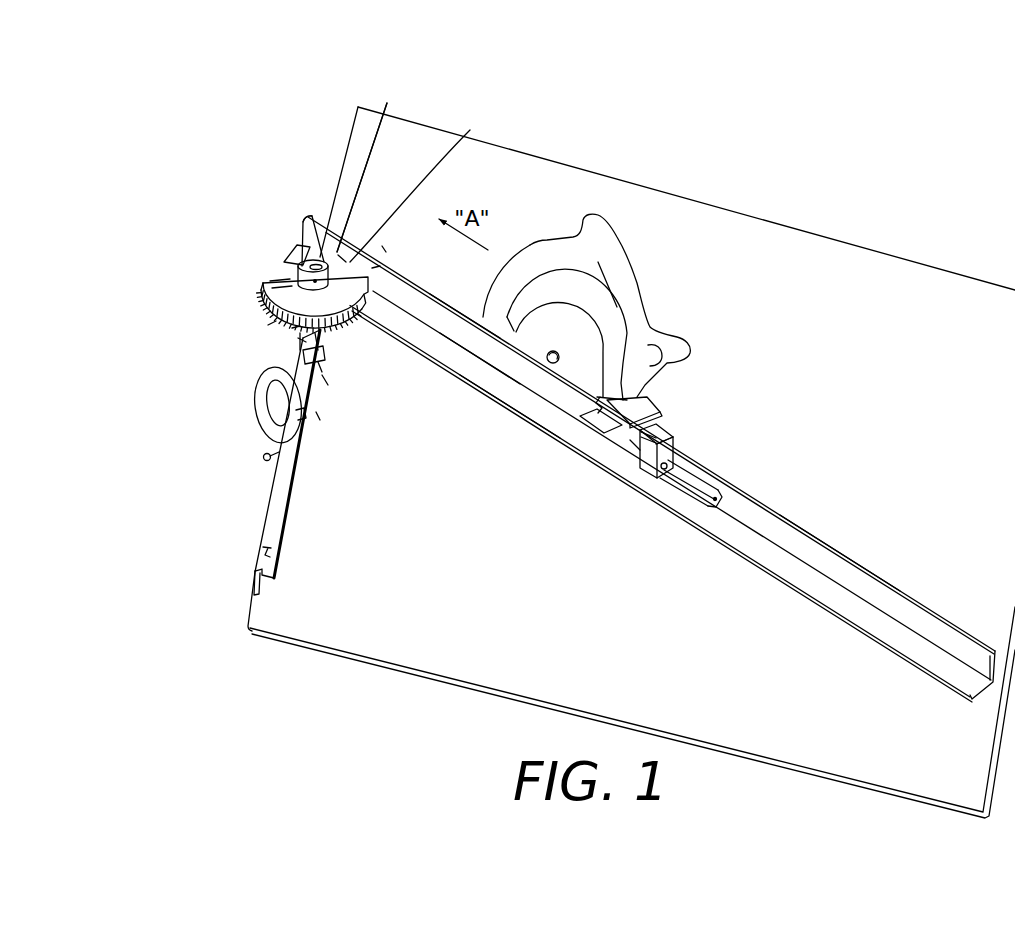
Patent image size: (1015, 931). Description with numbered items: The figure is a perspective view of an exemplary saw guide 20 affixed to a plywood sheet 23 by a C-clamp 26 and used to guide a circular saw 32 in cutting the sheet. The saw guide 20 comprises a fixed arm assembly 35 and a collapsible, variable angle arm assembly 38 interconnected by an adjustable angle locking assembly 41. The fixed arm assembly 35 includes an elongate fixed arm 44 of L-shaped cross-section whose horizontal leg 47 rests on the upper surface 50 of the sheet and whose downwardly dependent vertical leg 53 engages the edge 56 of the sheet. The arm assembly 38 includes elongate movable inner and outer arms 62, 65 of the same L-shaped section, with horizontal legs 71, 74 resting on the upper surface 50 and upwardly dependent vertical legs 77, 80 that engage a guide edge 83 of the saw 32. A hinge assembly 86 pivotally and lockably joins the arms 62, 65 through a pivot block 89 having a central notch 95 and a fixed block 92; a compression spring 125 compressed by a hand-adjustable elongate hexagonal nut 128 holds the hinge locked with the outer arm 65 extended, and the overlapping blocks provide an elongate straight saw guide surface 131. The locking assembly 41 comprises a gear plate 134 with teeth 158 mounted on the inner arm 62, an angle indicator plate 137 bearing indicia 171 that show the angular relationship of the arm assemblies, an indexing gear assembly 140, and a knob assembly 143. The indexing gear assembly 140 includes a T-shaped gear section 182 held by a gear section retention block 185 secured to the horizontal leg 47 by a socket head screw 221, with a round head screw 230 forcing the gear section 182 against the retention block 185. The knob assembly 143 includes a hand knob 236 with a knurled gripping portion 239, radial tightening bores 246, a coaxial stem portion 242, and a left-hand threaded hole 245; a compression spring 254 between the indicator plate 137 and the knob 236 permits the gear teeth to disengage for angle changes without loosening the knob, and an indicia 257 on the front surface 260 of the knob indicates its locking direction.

The saw guide 20 is at (258, 168).
The plywood sheet 23 is at (411, 677).
The C-clamp 26 is at (256, 449).
The circular saw 32 is at (651, 283).
The fixed arm assembly 35 is at (319, 417).
The variable angle arm assembly 38 is at (617, 513).
The adjustable angle locking assembly 41 is at (280, 259).
The fixed arm 44 is at (299, 505).
The horizontal leg 47 is at (270, 550).
The upper surface 50 is at (890, 346).
The vertical leg 53 is at (255, 582).
The edge 56 is at (352, 146).
The inner arm 62 is at (465, 308).
The outer arm 65 is at (901, 590).
The horizontal leg 71 is at (508, 392).
The horizontal leg 74 is at (815, 584).
The vertical leg 77 is at (469, 336).
The vertical leg 80 is at (776, 522).
The guide edge 83 is at (590, 428).
The hinge assembly 86 is at (680, 434).
The pivot block 89 is at (656, 436).
The fixed block 92 is at (674, 445).
The central notch 95 is at (636, 458).
The compression spring 125 is at (668, 468).
The hexagonal nut 128 is at (692, 497).
The saw guide surface 131 is at (812, 518).
The gear plate 134 is at (271, 323).
The angle indicator plate 137 is at (263, 289).
The indexing gear assembly 140 is at (334, 357).
The knob assembly 143 is at (340, 255).
The teeth 158 is at (292, 326).
The indicia 171 is at (263, 301).
The gear section 182 is at (291, 338).
The gear section retention block 185 is at (326, 380).
The socket head screw 221 is at (300, 339).
The round head screw 230 is at (332, 365).
The hand knob 236 is at (291, 246).
The knurled gripping portion 239 is at (382, 246).
The stem portion 242 is at (271, 286).
The left-hand threaded hole 245 is at (388, 104).
The tightening bores 246 is at (274, 280).
The compression spring 254 is at (378, 266).
The indicia 257 is at (325, 225).
The front surface 260 is at (470, 130).